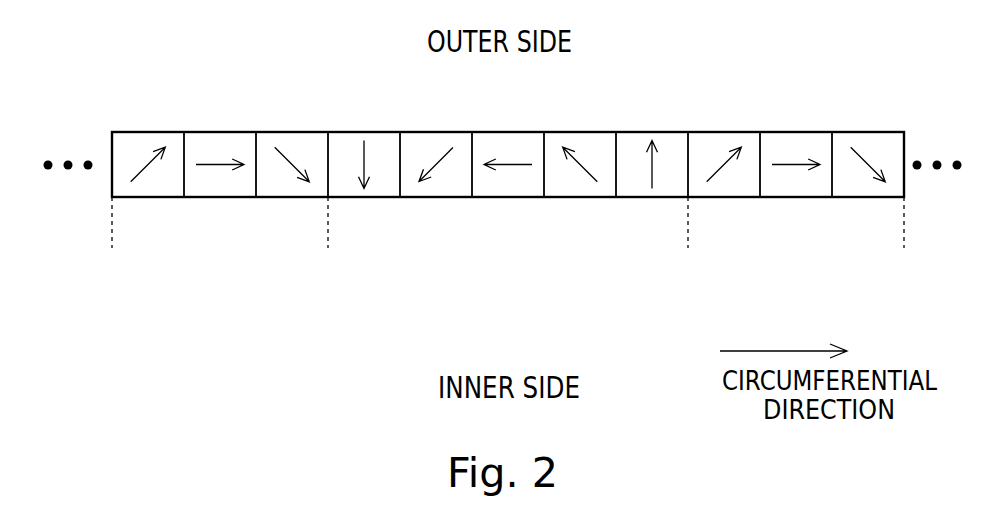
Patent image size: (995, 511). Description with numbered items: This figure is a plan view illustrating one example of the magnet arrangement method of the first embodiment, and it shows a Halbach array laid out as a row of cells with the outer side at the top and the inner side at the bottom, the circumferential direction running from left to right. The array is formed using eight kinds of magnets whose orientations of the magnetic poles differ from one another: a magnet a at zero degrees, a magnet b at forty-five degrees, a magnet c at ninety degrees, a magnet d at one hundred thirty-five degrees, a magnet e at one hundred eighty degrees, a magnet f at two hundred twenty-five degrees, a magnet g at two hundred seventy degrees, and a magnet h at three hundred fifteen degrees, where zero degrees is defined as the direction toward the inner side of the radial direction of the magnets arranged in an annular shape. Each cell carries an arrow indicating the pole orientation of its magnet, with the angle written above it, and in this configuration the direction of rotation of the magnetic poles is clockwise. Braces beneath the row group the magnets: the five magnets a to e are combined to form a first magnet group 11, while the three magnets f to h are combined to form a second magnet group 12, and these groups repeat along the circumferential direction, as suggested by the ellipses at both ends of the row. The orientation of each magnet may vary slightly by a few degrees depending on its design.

The first magnet group 11 is at (508, 207).
The second magnet group 12 is at (508, 207).
The magnet a is at (364, 168).
The magnet b is at (436, 168).
The magnet c is at (508, 168).
The magnet d is at (580, 168).
The magnet e is at (652, 168).
The magnet f is at (436, 168).
The magnet g is at (508, 168).
The magnet h is at (580, 168).